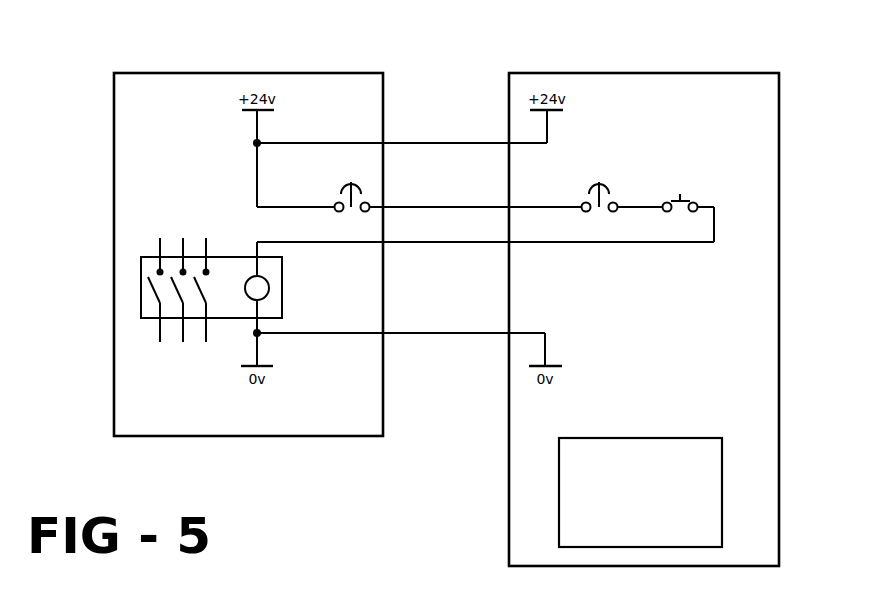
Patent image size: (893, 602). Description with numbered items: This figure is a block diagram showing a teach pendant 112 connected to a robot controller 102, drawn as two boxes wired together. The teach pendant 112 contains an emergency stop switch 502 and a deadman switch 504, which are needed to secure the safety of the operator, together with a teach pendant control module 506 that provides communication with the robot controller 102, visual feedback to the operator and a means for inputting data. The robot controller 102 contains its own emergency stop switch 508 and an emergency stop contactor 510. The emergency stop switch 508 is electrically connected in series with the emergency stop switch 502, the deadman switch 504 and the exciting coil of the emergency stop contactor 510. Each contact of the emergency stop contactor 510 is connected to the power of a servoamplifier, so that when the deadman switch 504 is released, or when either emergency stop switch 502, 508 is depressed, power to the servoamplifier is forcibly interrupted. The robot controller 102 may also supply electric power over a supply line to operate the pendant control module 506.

The robot controller 102 is at (262, 72).
The teach pendant 112 is at (745, 72).
The emergency stop switch 502 is at (610, 180).
The deadman switch 504 is at (663, 212).
The teach pendant control module 506 is at (637, 437).
The emergency stop switch 508 is at (358, 180).
The emergency stop contactor 510 is at (237, 257).